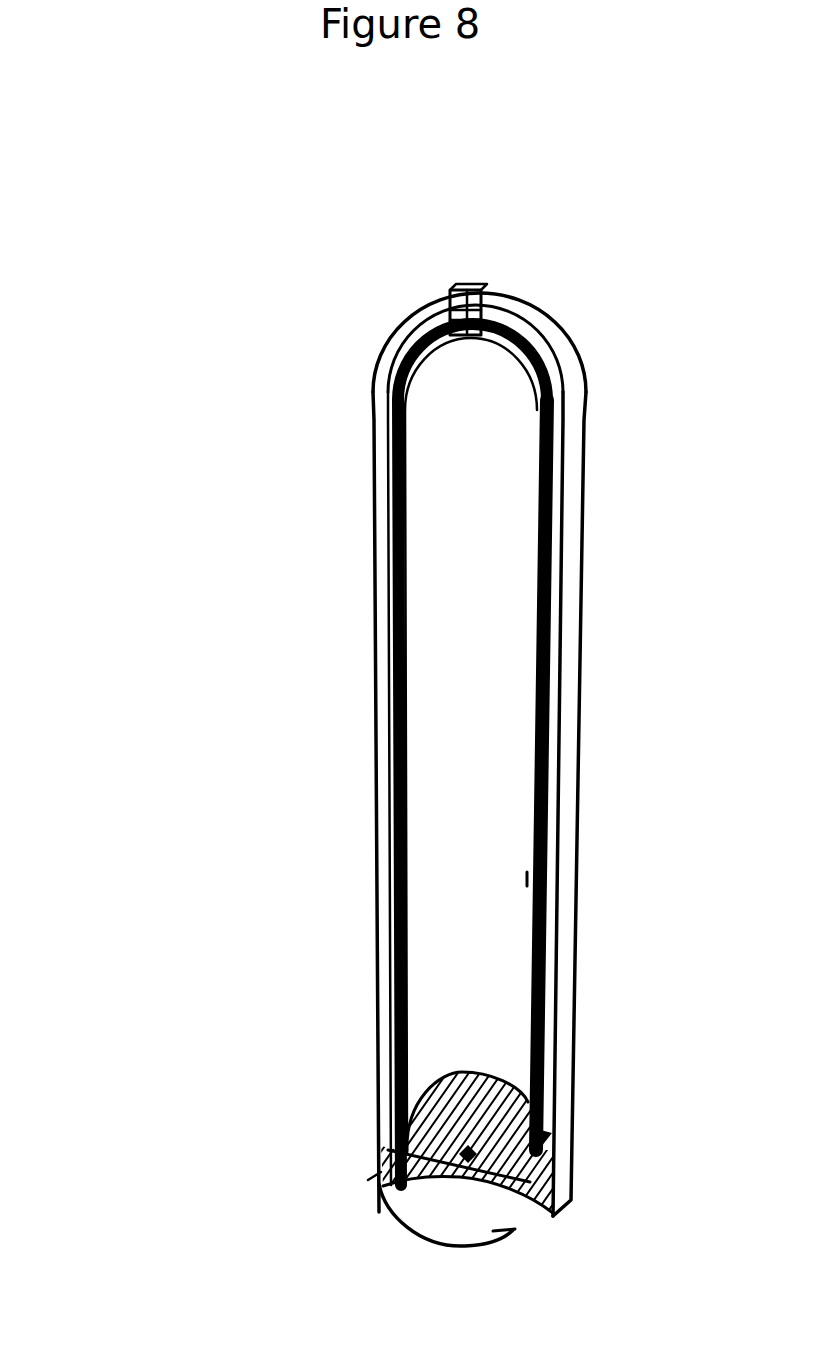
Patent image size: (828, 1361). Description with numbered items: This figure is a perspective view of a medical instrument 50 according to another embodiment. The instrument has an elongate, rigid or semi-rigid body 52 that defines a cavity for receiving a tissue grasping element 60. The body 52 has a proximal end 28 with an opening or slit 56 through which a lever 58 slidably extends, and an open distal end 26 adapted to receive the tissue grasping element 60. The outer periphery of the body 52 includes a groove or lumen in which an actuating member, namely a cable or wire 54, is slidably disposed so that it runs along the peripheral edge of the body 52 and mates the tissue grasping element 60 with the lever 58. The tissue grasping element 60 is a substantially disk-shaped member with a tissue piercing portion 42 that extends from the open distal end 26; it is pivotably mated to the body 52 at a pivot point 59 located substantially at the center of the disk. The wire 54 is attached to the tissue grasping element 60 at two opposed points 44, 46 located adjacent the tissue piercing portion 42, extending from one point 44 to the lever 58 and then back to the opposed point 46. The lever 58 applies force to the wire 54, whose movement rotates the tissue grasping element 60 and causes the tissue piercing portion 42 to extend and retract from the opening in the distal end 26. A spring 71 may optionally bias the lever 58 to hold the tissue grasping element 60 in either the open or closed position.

The medical instrument 50 is at (201, 177).
The proximal end 28 is at (370, 383).
The body 52 is at (374, 683).
The spring 71 is at (530, 315).
The actuating member 54 is at (547, 870).
The opening or slit 56 is at (557, 336).
The lever 58 is at (483, 293).
The attachment point 44 is at (378, 1141).
The pivot point 59 is at (468, 1154).
The attachment point 46 is at (556, 1143).
The distal end 26 is at (374, 1162).
The tissue grasping element 60 is at (423, 1232).
The tissue piercing portion 42 is at (495, 1240).